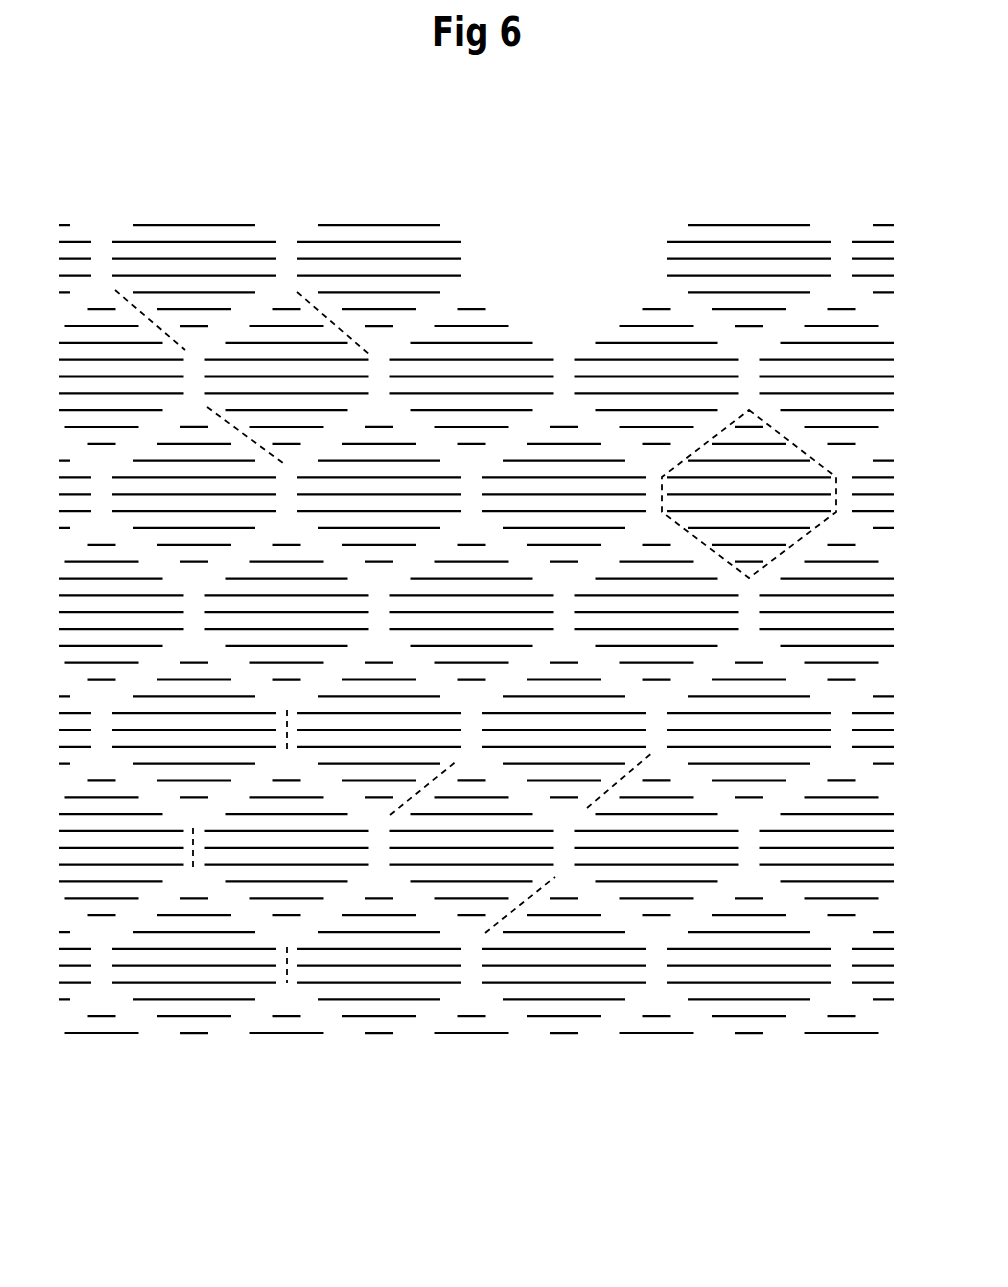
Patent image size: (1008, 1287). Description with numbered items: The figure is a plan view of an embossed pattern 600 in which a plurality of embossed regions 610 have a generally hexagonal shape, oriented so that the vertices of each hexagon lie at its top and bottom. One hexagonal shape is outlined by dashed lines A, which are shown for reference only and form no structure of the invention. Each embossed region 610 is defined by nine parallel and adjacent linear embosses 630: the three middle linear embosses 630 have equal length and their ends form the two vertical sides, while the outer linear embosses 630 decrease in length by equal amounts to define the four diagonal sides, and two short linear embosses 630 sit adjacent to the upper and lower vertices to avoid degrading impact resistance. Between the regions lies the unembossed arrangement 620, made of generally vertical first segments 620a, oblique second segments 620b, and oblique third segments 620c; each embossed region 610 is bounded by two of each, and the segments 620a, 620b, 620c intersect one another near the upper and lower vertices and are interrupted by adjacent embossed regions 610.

The embossed pattern 600 is at (815, 117).
The embossed region 610 is at (498, 384).
The unembossed arrangement 620 is at (655, 255).
The first segment 620a is at (288, 733).
The second segment 620b is at (593, 803).
The third segment 620c is at (240, 432).
The linear emboss 630 is at (710, 983).
The dashed lines A is at (725, 428).